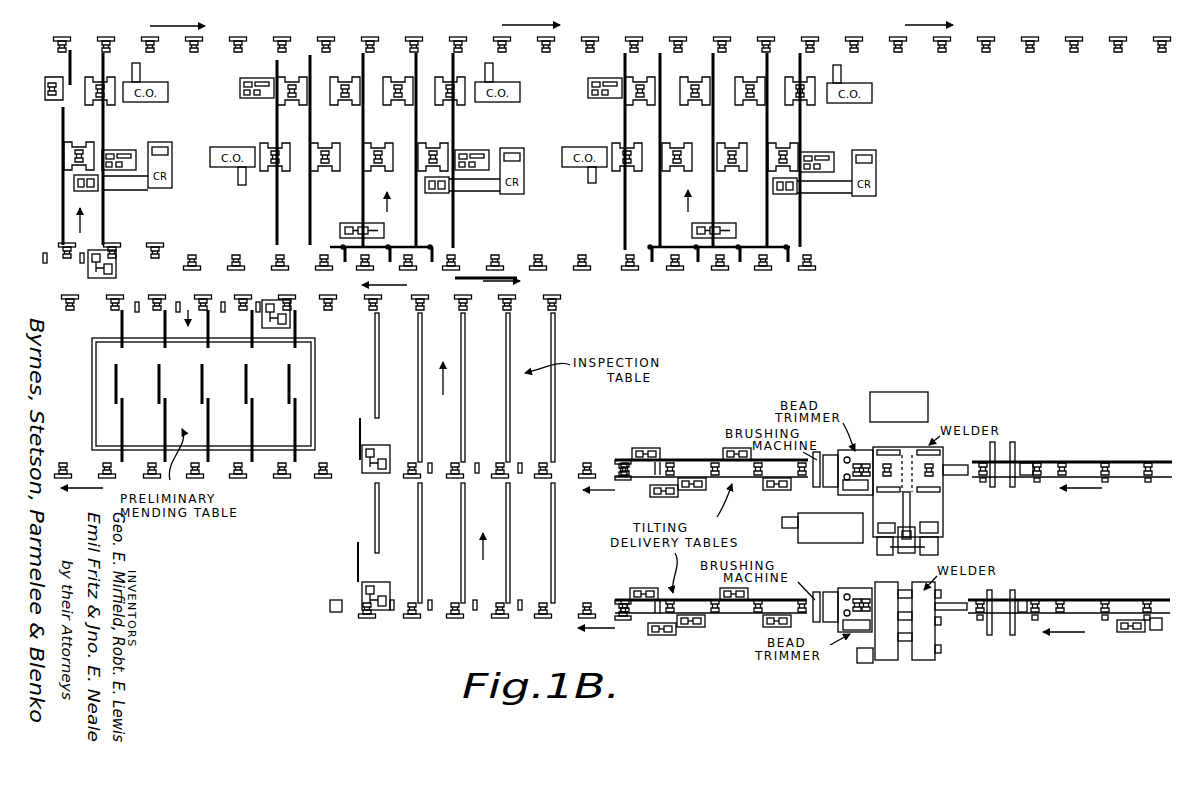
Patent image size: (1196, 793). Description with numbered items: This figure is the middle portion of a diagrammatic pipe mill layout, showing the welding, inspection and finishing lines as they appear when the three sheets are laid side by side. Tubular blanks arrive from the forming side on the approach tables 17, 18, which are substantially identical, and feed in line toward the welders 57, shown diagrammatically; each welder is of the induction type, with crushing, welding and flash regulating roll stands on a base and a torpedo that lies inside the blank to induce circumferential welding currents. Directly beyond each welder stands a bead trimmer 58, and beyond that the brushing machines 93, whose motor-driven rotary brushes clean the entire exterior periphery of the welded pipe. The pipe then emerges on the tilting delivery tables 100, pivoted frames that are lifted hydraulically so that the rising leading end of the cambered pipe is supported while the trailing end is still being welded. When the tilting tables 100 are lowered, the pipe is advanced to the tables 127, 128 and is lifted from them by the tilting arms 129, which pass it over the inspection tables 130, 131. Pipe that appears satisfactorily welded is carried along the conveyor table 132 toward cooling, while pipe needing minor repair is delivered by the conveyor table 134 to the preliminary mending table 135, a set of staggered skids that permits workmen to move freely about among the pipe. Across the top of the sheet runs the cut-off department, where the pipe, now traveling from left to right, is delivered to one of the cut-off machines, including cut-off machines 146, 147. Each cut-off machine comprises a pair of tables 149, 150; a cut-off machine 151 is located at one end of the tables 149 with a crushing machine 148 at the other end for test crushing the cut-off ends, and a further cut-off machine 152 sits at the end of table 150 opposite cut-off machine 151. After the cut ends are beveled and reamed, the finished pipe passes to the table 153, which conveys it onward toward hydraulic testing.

The table 153 is at (388, 43).
The table 150 is at (97, 85).
The table 149 is at (97, 140).
The cut-off machine 152 is at (147, 101).
The cut-off machine 151 is at (230, 167).
The crushing machine 148 is at (165, 188).
The cut-off machine 146 is at (350, 202).
The cut-off machine 147 is at (757, 204).
The preliminary mending table 135 is at (120, 375).
The conveyor table 132 is at (255, 470).
The conveyor table 134 is at (560, 303).
The inspection table 131 is at (556, 390).
The inspection table 130 is at (555, 527).
The tilting arms 129 is at (479, 462).
The table 128 is at (555, 465).
The table 127 is at (480, 612).
The tilting delivery table 100 is at (698, 449).
The brushing machine 93 is at (813, 482).
The bead trimmer 58 is at (858, 467).
The welder 57 is at (925, 477).
The approach table 17 is at (1083, 460).
The approach table 18 is at (1103, 619).